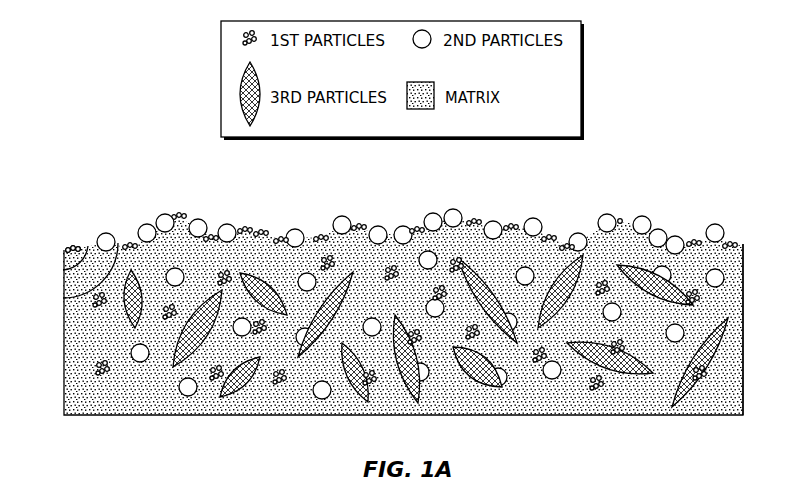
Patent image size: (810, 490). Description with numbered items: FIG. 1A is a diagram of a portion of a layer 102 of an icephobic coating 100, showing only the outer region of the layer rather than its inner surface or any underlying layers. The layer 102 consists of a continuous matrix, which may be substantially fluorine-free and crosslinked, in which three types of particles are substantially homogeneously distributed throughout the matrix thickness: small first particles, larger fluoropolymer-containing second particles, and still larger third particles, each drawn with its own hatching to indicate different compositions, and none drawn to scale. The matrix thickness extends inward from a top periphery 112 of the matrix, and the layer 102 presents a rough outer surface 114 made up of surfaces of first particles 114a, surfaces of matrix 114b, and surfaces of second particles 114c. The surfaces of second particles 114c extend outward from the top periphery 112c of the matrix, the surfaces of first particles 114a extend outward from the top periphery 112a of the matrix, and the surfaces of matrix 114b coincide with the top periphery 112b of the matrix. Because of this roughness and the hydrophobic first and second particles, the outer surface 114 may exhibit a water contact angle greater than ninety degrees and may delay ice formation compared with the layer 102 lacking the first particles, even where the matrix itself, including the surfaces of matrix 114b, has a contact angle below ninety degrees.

The coating 100 is at (390, 289).
The layer 102 is at (744, 259).
The top periphery 112 is at (231, 247).
The top periphery 112a is at (63, 270).
The top periphery 112b is at (63, 298).
The top periphery 112c is at (150, 249).
The outer surface 114 is at (379, 214).
The surfaces of first particles 114a is at (97, 248).
The surfaces of matrix 114b is at (124, 241).
The surfaces of second particles 114c is at (148, 223).